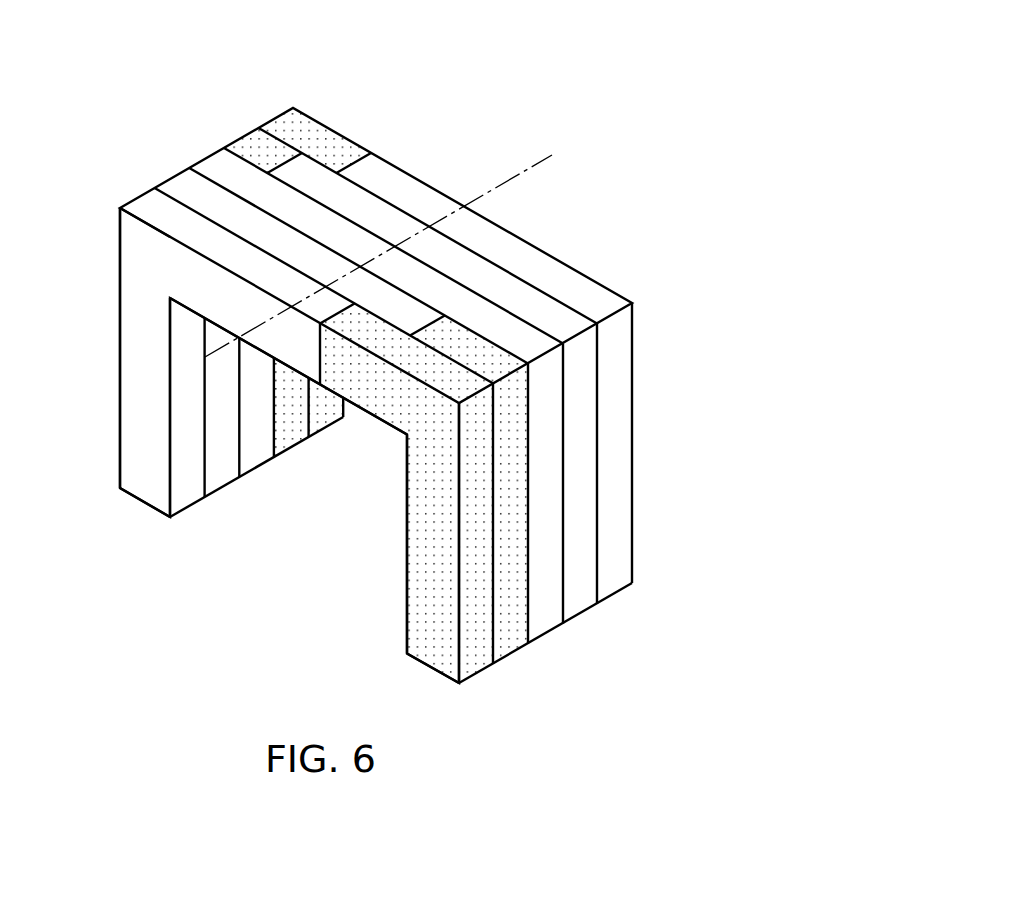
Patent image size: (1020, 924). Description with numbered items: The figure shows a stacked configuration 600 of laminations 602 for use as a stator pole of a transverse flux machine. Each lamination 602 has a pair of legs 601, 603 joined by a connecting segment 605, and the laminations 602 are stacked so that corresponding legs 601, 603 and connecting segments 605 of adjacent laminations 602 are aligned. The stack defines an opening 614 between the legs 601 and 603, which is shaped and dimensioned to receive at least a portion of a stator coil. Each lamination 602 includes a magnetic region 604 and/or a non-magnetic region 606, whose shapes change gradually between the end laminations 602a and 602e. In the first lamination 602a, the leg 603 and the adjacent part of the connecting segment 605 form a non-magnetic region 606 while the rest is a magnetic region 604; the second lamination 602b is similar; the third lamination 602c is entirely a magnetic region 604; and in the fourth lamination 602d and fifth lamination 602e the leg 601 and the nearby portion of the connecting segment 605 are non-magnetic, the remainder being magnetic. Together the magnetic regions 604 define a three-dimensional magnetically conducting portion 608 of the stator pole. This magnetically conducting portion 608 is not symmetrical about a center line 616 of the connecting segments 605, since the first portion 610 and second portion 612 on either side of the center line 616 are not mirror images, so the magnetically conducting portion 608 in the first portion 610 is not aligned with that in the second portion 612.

The stacked configuration 600 is at (690, 36).
The leg 601 is at (155, 375).
The laminations 602 is at (230, 172).
The first lamination 602a is at (475, 653).
The second lamination 602b is at (502, 627).
The third lamination 602c is at (543, 612).
The fourth lamination 602d is at (572, 587).
The fifth lamination 602e is at (613, 573).
The leg 603 is at (430, 608).
The magnetic region 604 is at (153, 263).
The connecting segment 605 is at (310, 362).
The non-magnetic region 606 is at (412, 483).
The magnetically conducting portion 608 is at (608, 375).
The first portion 610 is at (404, 140).
The second portion 612 is at (575, 235).
The opening 614 is at (270, 540).
The center line 616 is at (508, 178).